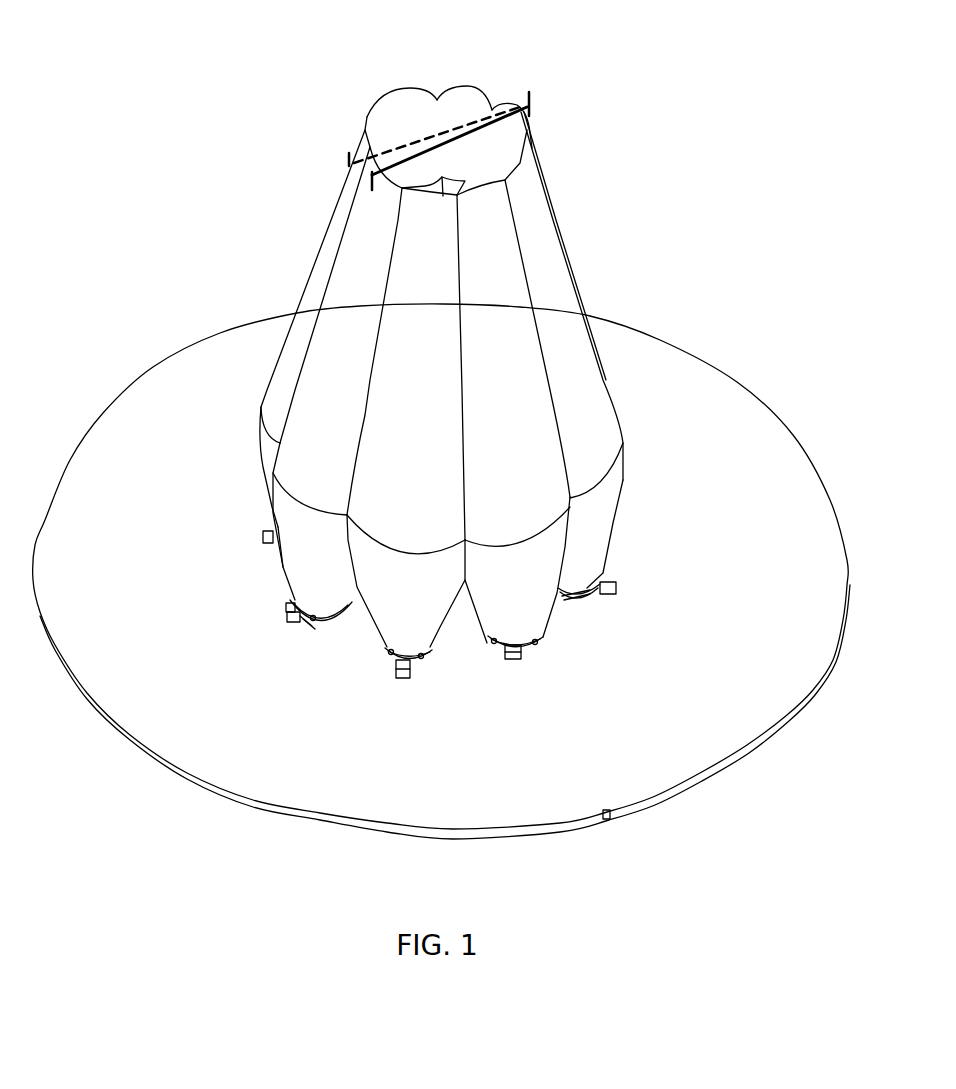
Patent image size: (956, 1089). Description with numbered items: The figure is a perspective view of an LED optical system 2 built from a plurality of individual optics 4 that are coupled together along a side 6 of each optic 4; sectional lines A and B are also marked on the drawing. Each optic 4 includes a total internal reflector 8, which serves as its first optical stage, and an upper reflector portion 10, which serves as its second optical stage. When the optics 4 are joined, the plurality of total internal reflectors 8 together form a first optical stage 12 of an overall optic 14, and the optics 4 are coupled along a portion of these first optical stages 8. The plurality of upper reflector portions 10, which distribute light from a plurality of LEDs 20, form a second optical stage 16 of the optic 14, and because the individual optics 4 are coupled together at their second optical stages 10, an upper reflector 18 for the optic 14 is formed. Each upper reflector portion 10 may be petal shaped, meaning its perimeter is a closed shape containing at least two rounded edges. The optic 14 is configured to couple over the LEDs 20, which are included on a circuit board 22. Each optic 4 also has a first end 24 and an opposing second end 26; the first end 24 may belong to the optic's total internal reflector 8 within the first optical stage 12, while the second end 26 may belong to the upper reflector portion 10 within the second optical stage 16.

The LED optical system 2 is at (212, 137).
The optic 4 is at (377, 326).
The side 6 is at (458, 263).
The total internal reflector 8 is at (293, 442).
The upper reflector portion 10 is at (477, 112).
The first optical stage 12 is at (553, 547).
The optic 14 is at (322, 350).
The second optical stage 16 is at (378, 133).
The upper reflector 18 is at (415, 132).
The LED 20 is at (313, 617).
The circuit board 22 is at (176, 642).
The first end 24 is at (507, 633).
The second end 26 is at (492, 188).